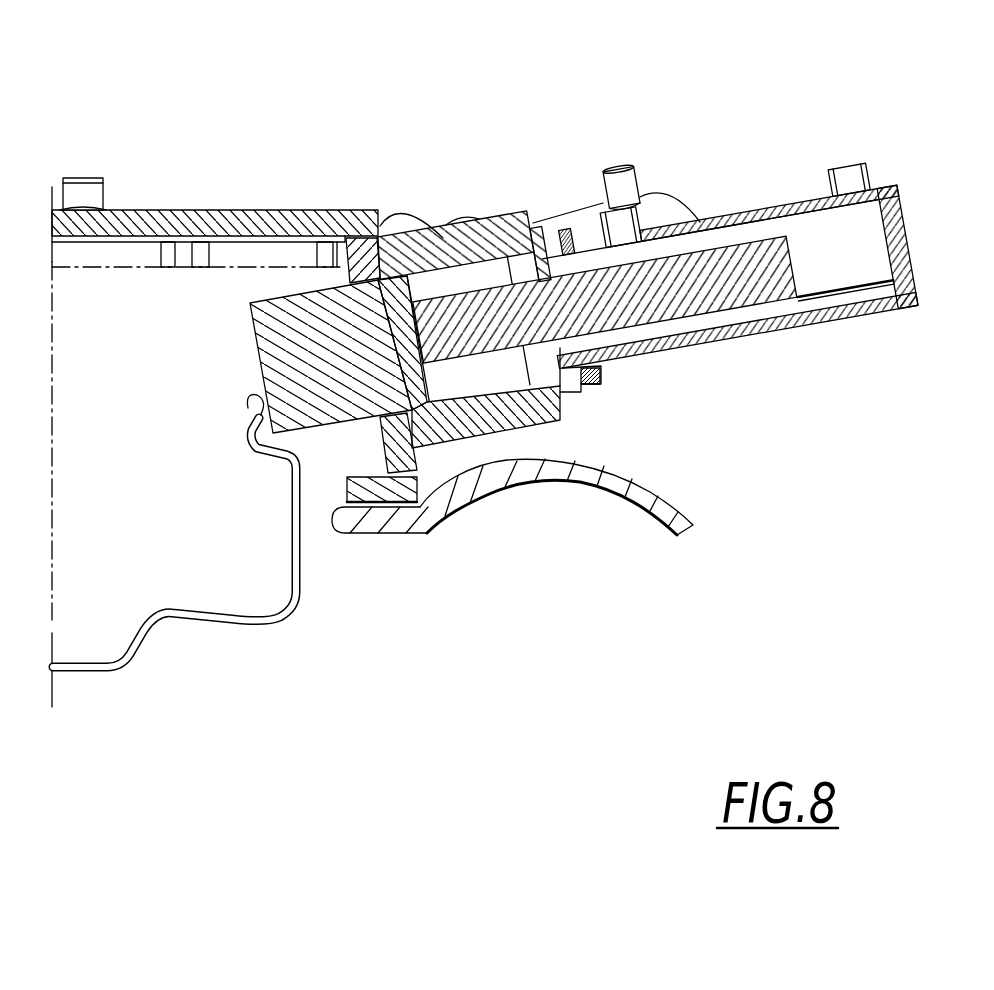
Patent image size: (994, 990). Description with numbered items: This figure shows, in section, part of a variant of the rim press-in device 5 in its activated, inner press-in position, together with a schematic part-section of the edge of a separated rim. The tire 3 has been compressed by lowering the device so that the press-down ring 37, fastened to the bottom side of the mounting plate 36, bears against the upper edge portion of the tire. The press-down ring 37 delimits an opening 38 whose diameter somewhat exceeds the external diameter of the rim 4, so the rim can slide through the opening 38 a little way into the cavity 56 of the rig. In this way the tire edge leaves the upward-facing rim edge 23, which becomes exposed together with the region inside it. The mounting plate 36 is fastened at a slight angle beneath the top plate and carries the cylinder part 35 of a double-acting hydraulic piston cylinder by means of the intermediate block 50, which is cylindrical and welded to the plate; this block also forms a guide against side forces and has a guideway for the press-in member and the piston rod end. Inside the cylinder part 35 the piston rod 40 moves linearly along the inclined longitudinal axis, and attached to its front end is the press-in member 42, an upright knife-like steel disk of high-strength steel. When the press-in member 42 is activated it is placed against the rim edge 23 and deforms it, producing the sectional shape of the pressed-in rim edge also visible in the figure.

The tire 3 is at (607, 482).
The rim 4 is at (289, 532).
The rim press-in device 5 is at (391, 130).
The rim edge 23 is at (243, 413).
The cylinder part 35 is at (738, 212).
The mounting plate 36 is at (355, 223).
The press-down ring 37 is at (400, 487).
The opening 38 is at (318, 507).
The piston rod 40 is at (673, 302).
The press-in member 42 is at (280, 323).
The intermediate block 50 is at (502, 210).
The cavity 56 is at (150, 305).